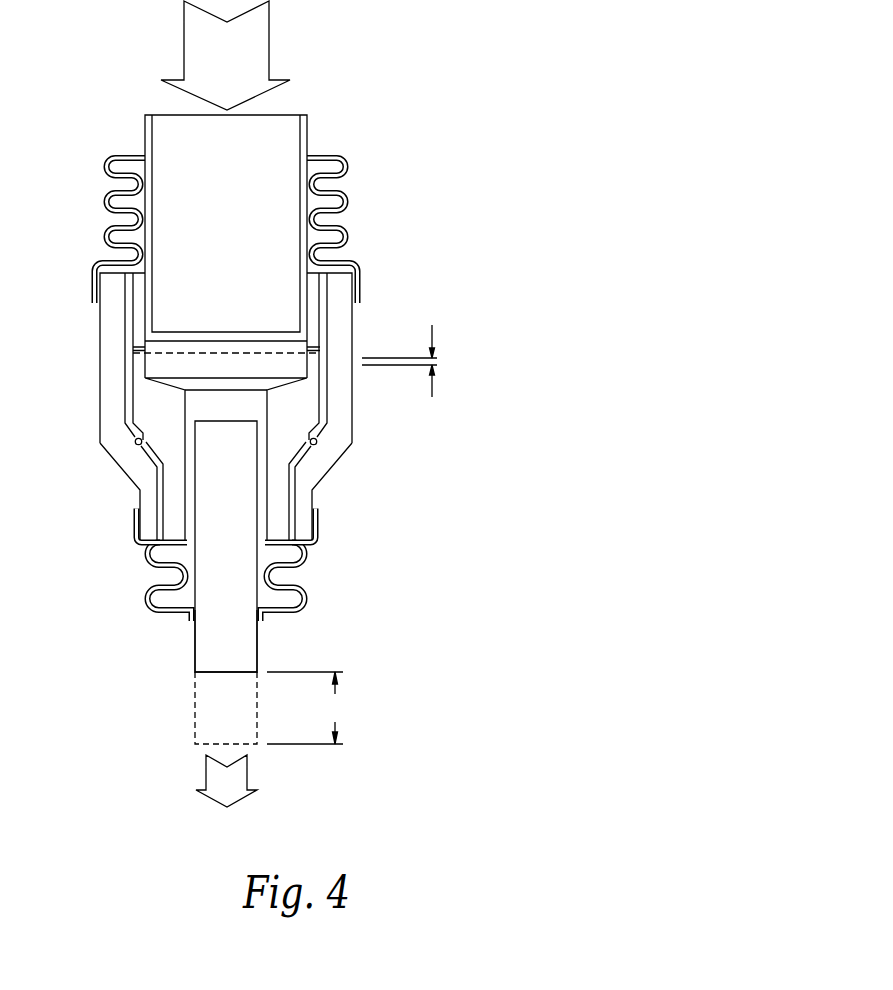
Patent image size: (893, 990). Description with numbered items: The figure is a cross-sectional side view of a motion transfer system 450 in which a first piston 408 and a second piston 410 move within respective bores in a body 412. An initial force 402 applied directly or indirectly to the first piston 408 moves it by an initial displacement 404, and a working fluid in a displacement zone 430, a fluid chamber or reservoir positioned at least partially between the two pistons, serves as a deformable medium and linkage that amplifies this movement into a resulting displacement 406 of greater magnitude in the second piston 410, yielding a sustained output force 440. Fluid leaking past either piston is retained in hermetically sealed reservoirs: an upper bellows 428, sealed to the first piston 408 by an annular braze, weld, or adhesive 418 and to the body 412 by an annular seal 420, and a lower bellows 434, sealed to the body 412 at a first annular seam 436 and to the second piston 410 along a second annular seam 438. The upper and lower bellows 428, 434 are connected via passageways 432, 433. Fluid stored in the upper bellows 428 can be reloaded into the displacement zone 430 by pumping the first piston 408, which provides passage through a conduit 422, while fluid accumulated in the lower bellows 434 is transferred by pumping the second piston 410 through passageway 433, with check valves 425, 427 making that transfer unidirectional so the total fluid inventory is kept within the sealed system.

The initial force 402 is at (269, 37).
The initial displacement 404 is at (440, 391).
The resulting displacement 406 is at (310, 708).
The first piston 408 is at (171, 149).
The second piston 410 is at (206, 446).
The body 412 is at (112, 334).
The annular braze, weld, or adhesive 418 is at (145, 138).
The annular seal 420 is at (362, 293).
The conduit 422 is at (313, 355).
The check valve 425 is at (318, 448).
The check valve 427 is at (136, 446).
The upper bellows 428 is at (345, 183).
The displacement zone 430 is at (180, 383).
The passageway 432 is at (328, 410).
The passageway 433 is at (147, 467).
The lower bellows 434 is at (308, 568).
The first annular seam 436 is at (323, 522).
The second annular seam 438 is at (268, 620).
The output force 440 is at (248, 778).
The motion transfer system 450 is at (478, 90).